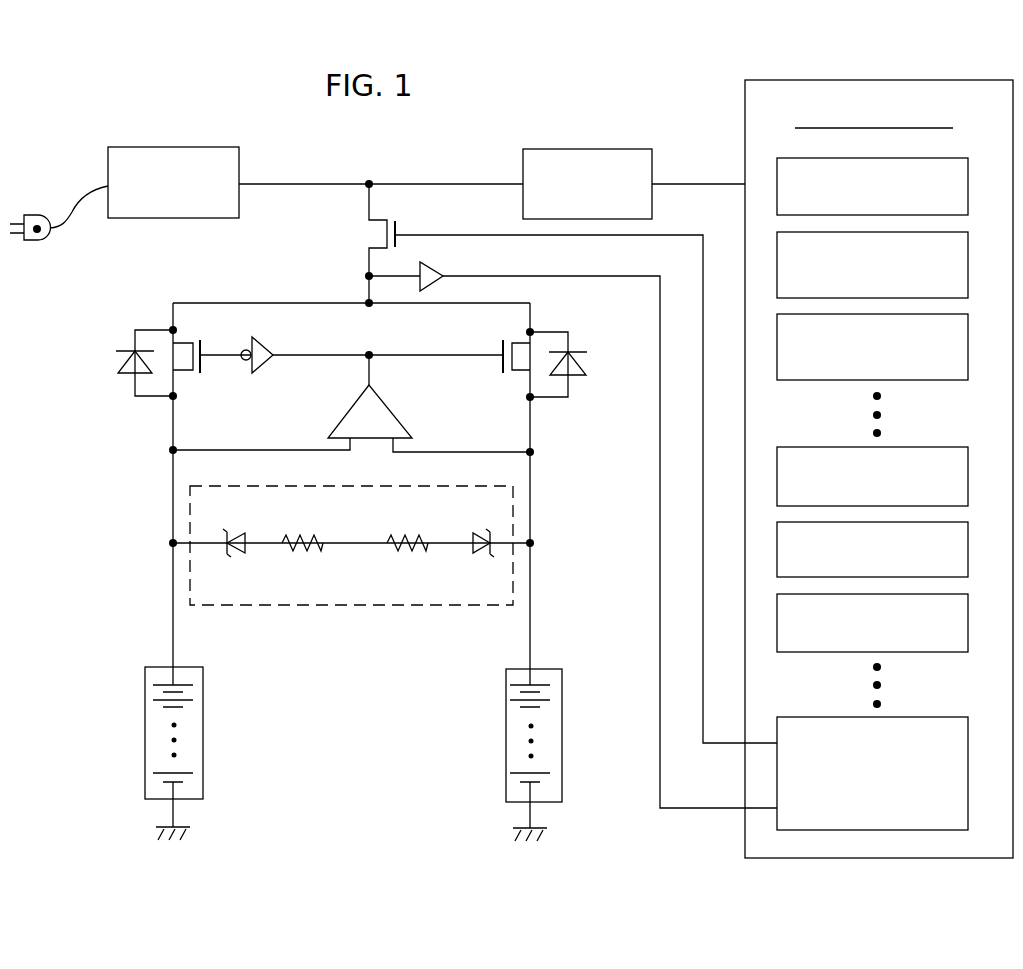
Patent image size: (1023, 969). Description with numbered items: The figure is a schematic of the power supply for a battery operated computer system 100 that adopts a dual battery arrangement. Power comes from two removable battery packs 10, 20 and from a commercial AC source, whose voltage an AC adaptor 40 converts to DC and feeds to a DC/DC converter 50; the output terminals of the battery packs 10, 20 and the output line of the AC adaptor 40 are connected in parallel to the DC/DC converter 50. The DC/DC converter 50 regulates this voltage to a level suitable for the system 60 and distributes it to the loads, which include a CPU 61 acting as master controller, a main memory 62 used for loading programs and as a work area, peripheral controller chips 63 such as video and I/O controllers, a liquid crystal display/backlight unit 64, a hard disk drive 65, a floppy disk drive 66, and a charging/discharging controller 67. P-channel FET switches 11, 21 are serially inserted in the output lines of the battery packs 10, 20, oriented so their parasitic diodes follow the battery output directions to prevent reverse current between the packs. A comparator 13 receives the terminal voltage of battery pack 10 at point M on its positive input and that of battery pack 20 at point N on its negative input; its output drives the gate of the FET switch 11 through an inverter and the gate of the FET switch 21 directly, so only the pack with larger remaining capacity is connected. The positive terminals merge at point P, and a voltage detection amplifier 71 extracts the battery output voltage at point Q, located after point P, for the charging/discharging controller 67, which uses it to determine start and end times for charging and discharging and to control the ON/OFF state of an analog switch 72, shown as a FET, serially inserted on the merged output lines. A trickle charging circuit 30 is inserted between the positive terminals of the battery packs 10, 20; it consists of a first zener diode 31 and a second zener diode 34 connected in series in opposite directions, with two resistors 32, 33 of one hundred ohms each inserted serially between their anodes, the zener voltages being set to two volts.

The battery operated computer system 100 is at (627, 814).
The AC adaptor 40 is at (210, 146).
The DC/DC converter 50 is at (622, 148).
The analog switch 72 is at (371, 238).
The voltage detection amplifier 71 is at (443, 264).
The P-channel FET switch 11 is at (125, 383).
The P-channel FET switch 21 is at (577, 384).
The comparator 13 is at (398, 408).
The trickle charging circuit 30 is at (336, 611).
The first zener diode 31 is at (238, 556).
The resistor 32 is at (305, 556).
The resistor 33 is at (399, 556).
The second zener diode 34 is at (477, 556).
The battery pack 10 is at (145, 743).
The battery pack 20 is at (565, 744).
The system 60 is at (977, 78).
The CPU 61 is at (970, 183).
The main memory 62 is at (970, 258).
The peripheral controller chips 63 is at (970, 335).
The liquid crystal display/backlight unit 64 is at (970, 467).
The hard disk drive 65 is at (970, 545).
The floppy disk drive 66 is at (970, 620).
The charging/discharging controller 67 is at (970, 742).